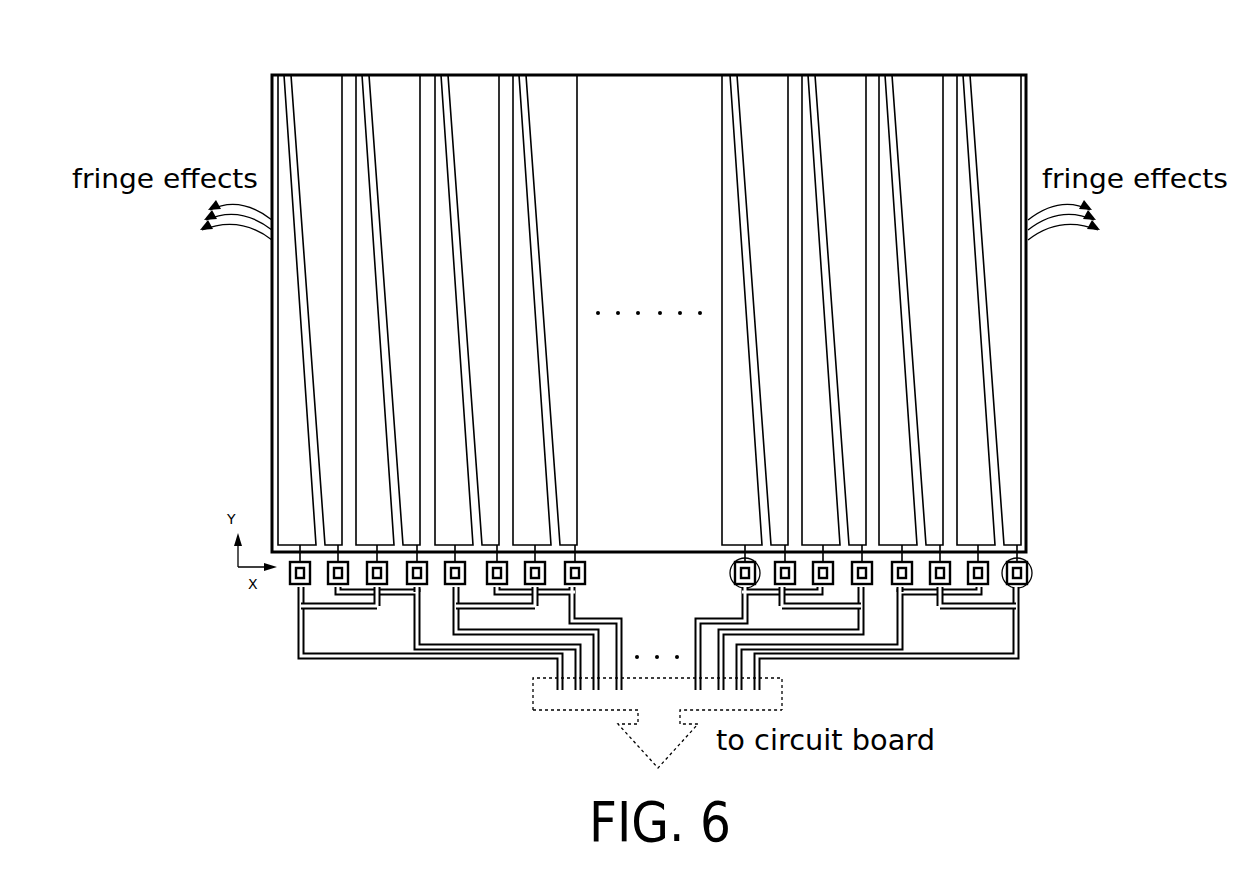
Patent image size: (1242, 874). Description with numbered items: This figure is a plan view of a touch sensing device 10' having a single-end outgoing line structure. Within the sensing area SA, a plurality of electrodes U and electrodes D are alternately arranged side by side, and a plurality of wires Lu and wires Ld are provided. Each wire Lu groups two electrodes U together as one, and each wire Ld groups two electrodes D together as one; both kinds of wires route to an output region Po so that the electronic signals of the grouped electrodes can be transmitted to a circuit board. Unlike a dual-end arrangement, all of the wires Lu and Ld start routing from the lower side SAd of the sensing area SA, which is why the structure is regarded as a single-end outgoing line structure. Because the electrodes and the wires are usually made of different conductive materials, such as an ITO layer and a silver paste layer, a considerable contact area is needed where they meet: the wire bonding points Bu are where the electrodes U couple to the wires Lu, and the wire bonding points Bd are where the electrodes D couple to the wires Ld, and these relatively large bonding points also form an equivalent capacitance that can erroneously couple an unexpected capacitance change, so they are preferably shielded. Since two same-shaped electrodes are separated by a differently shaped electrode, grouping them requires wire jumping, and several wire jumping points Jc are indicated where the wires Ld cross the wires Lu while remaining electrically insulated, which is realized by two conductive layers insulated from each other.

The touch sensing device 10' is at (710, 287).
The sensing area SA is at (656, 74).
The electrodes U is at (656, 310).
The electrodes D is at (636, 310).
The lower side of the sensing area SAd is at (623, 568).
The wire bonding points Bd is at (729, 576).
The wire bonding points Bu is at (1033, 576).
The wires Ld is at (622, 638).
The wires Lu is at (710, 638).
The wire jumping points Jc is at (658, 612).
The output region Po is at (785, 691).